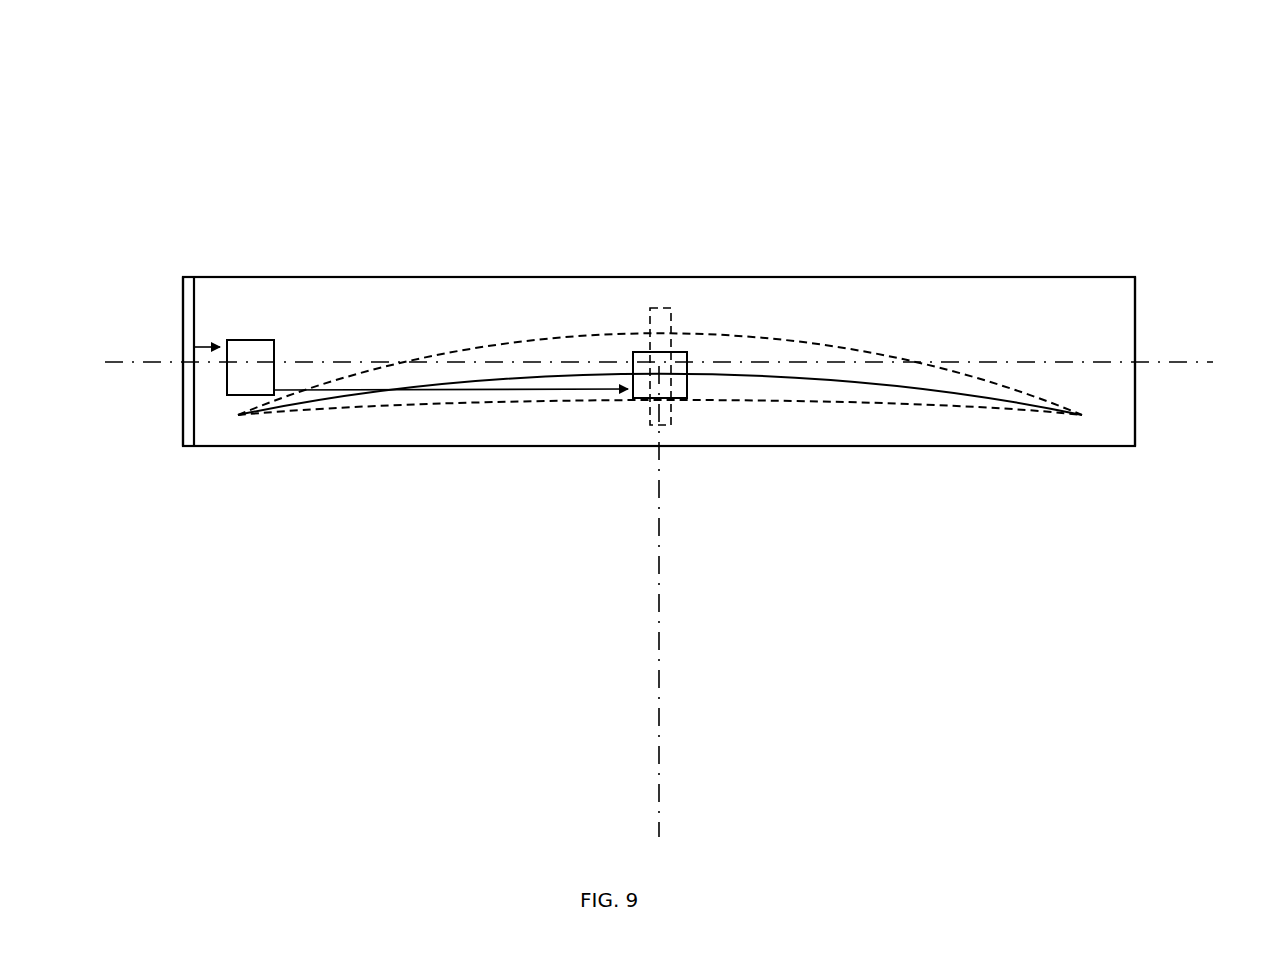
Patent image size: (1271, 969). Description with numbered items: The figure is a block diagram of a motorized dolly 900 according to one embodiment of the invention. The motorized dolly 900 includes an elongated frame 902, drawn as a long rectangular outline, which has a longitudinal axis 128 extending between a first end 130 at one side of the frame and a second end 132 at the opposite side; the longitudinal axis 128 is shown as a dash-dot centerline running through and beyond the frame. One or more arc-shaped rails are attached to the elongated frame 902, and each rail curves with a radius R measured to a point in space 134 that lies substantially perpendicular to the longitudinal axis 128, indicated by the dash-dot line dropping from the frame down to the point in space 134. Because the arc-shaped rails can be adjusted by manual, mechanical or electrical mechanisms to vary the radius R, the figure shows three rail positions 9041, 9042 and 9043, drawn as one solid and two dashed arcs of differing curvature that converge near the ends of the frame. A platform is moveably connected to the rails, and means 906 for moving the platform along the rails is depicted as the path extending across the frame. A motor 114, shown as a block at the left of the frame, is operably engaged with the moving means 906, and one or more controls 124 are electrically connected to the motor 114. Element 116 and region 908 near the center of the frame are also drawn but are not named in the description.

The motorized dolly 900 is at (926, 58).
The elongated frame 902 is at (363, 290).
The one or more controls 124 is at (190, 282).
The second end 132 is at (176, 435).
The first end 130 is at (1142, 426).
The longitudinal axis 128 is at (661, 362).
The point in space 134 is at (666, 618).
The motor 114 is at (250, 353).
The detector 116 is at (650, 368).
The detection region 908 is at (659, 320).
The means for moving the platform 906 is at (340, 392).
The arc-shaped rail position 9041 is at (520, 378).
The arc-shaped rail position 9042 is at (543, 400).
The arc-shaped rail position 9043 is at (552, 338).